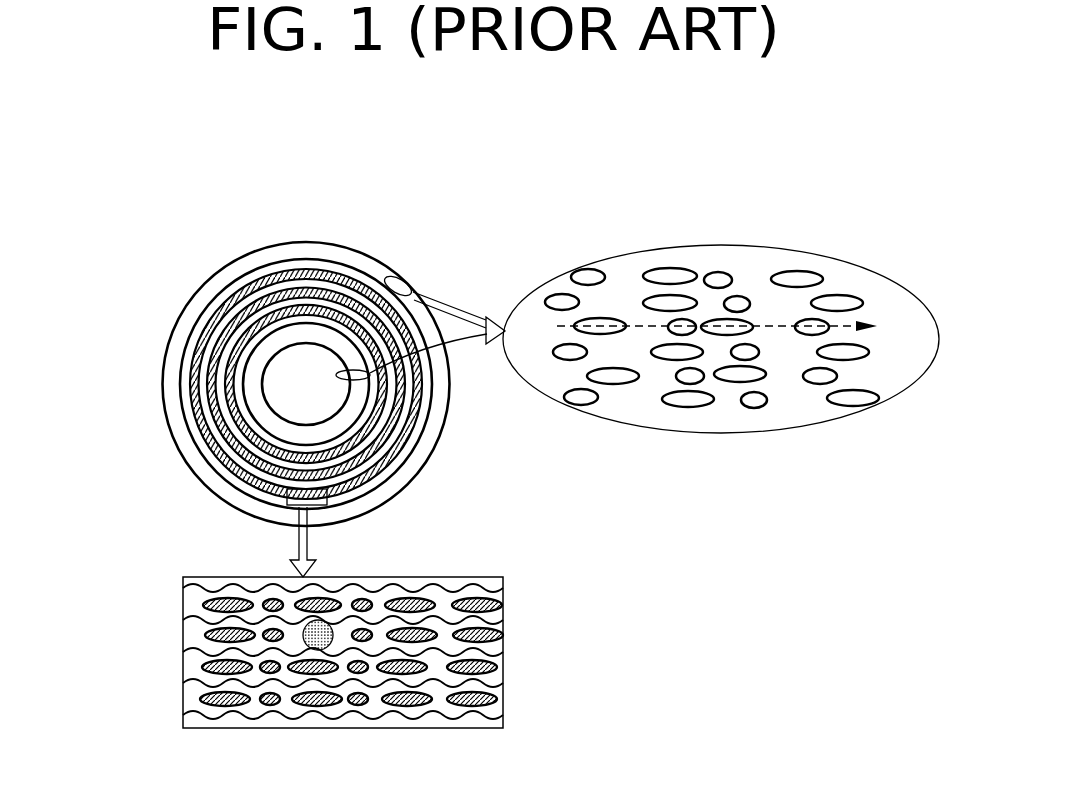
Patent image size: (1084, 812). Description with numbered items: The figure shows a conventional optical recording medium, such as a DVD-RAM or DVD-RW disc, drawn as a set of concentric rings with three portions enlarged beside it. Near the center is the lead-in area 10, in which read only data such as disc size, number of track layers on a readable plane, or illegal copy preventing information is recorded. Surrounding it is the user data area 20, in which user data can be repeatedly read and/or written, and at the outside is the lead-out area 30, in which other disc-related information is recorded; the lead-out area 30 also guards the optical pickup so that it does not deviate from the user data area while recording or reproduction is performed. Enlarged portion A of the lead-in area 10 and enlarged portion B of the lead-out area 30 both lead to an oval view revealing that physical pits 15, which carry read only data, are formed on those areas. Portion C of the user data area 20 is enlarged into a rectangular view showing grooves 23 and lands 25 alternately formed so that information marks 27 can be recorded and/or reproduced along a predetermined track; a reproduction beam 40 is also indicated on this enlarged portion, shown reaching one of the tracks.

The lead-in area 10 is at (307, 327).
The physical pits 15 is at (754, 404).
The user data area 20 is at (170, 373).
The grooves 23 is at (186, 606).
The lands 25 is at (190, 637).
The information marks 27 is at (463, 706).
The lead-out area 30 is at (267, 250).
The reproduction beam 40 is at (327, 622).
The enlarged portion of lead-in area A is at (337, 375).
The enlarged portion of lead-out area B is at (400, 280).
The portion of user data area C is at (283, 506).